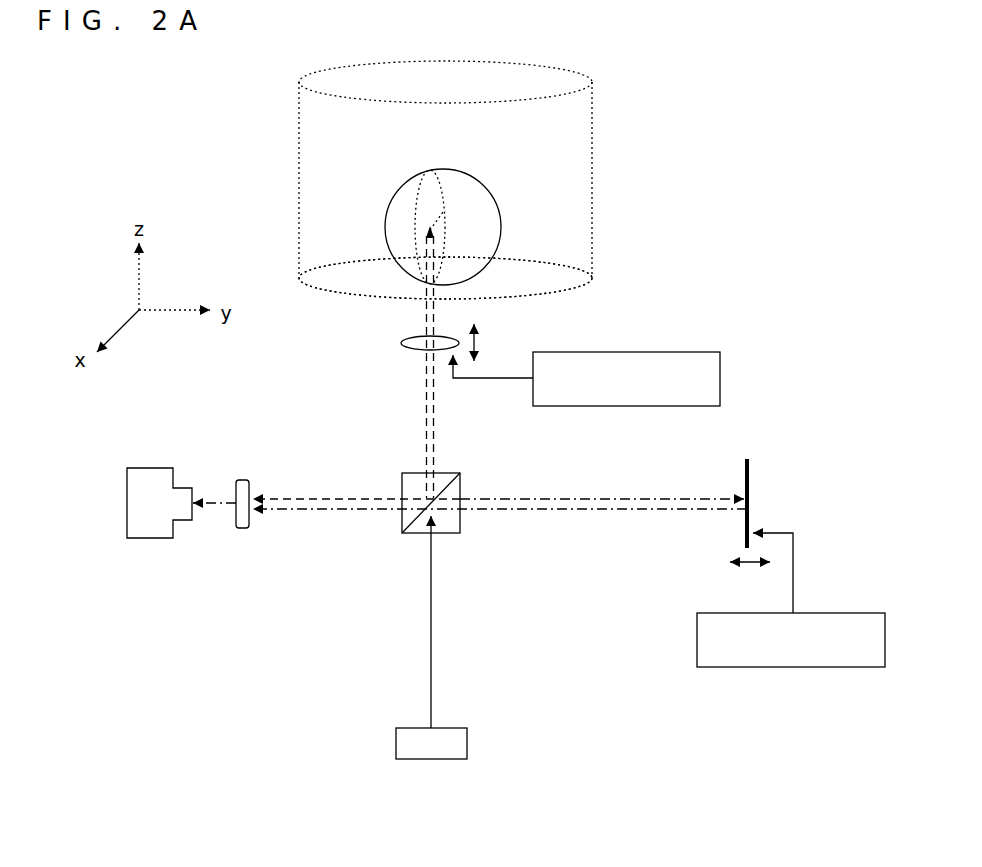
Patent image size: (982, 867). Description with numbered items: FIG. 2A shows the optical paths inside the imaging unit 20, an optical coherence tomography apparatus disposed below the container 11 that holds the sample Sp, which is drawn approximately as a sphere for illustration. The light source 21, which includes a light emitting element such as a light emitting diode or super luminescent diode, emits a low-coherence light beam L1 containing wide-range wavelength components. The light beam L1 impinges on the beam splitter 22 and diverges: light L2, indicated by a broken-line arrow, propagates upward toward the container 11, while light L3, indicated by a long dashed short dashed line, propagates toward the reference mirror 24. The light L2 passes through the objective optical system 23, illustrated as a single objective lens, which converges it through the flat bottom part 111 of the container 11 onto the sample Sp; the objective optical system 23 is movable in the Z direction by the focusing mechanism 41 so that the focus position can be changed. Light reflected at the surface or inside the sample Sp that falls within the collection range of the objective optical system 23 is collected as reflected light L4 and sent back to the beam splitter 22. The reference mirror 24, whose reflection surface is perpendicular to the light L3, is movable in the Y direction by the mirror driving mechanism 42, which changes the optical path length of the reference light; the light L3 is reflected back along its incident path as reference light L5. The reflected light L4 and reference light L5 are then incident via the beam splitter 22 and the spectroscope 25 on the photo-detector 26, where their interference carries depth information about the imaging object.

The container 11 is at (298, 142).
The bottom part 111 is at (558, 272).
The sample Sp is at (498, 198).
The imaging unit 20 is at (482, 492).
The light source 21 is at (467, 743).
The beam splitter 22 is at (417, 533).
The objective optical system 23 is at (401, 343).
The reference mirror 24 is at (750, 480).
The spectroscope 25 is at (244, 480).
The photo-detector 26 is at (157, 538).
The focusing mechanism 41 is at (692, 352).
The mirror driving mechanism 42 is at (845, 613).
The light beam L1 is at (431, 652).
The light L2 is at (438, 428).
The light L3 is at (617, 497).
The reflected light L4 is at (420, 445).
The reference light L5 is at (585, 512).